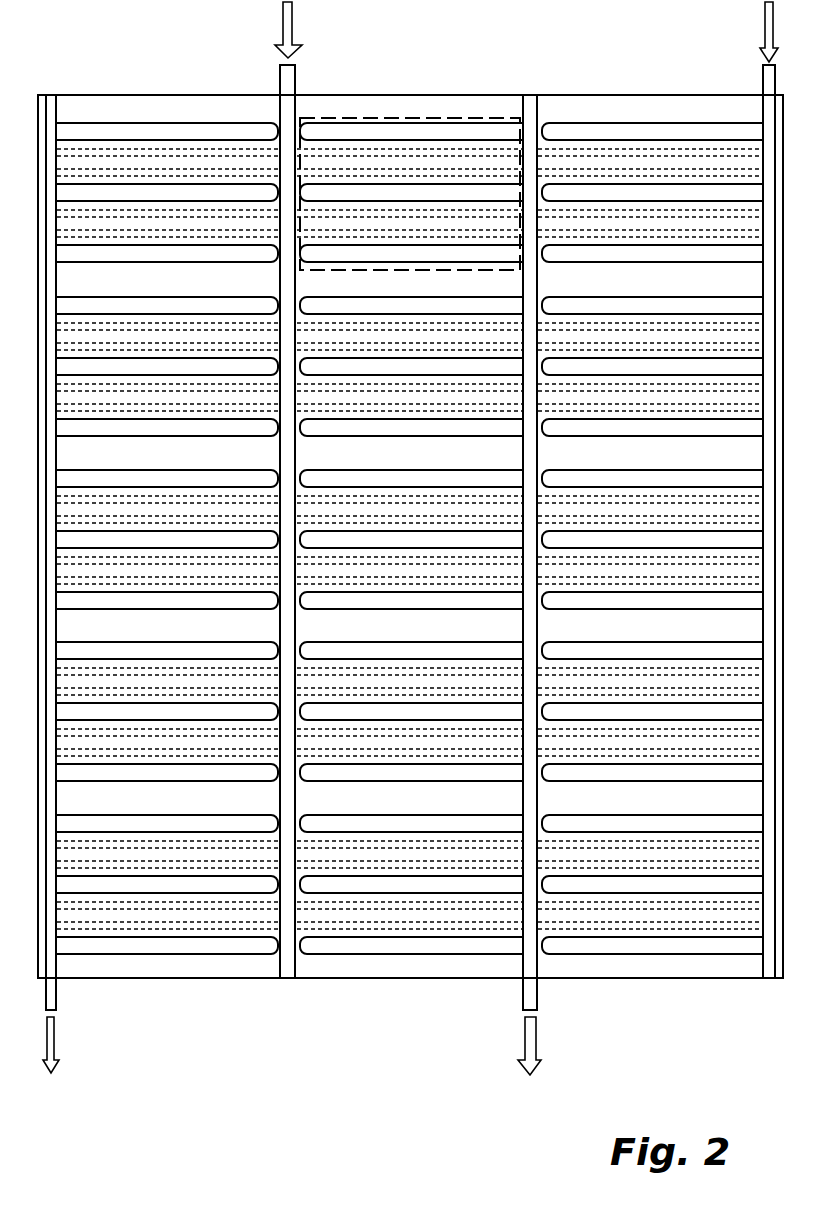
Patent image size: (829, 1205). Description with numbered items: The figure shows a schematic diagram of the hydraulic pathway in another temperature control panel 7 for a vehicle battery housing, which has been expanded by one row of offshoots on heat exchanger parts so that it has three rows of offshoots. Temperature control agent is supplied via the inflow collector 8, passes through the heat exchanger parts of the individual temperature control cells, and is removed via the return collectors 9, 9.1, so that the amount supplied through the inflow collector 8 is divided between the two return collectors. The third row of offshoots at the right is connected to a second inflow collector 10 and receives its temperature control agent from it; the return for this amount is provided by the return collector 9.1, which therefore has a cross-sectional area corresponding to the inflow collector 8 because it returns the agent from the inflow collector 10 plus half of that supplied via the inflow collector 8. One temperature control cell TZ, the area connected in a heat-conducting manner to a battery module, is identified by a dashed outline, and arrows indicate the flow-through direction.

The temperature control panel 7 is at (270, 1012).
The inflow collector 8 is at (278, 117).
The return collector 9 is at (58, 112).
The return collector 9.1 is at (518, 112).
The second inflow collector 10 is at (762, 118).
The temperature control cell TZ is at (375, 118).